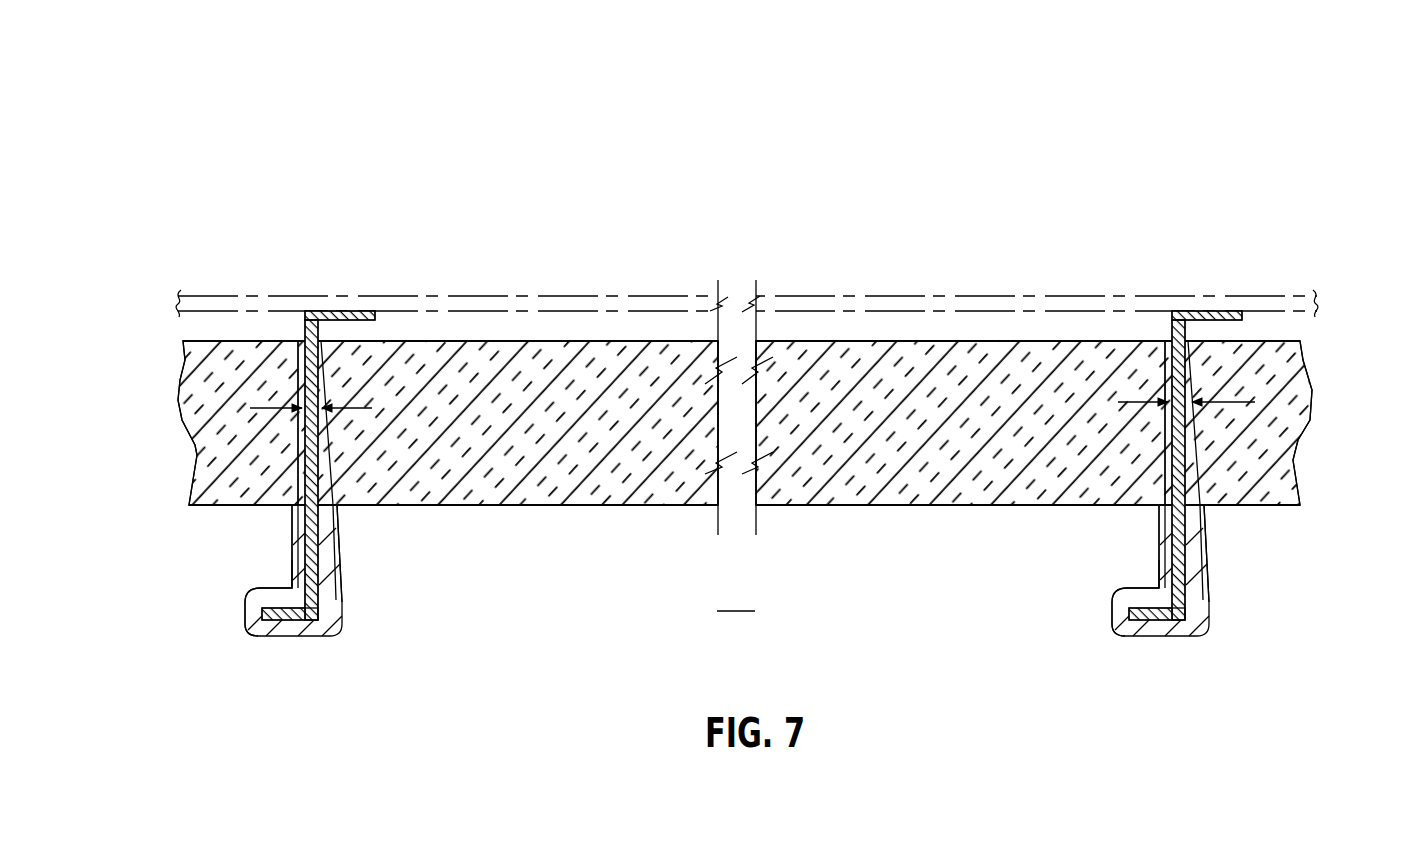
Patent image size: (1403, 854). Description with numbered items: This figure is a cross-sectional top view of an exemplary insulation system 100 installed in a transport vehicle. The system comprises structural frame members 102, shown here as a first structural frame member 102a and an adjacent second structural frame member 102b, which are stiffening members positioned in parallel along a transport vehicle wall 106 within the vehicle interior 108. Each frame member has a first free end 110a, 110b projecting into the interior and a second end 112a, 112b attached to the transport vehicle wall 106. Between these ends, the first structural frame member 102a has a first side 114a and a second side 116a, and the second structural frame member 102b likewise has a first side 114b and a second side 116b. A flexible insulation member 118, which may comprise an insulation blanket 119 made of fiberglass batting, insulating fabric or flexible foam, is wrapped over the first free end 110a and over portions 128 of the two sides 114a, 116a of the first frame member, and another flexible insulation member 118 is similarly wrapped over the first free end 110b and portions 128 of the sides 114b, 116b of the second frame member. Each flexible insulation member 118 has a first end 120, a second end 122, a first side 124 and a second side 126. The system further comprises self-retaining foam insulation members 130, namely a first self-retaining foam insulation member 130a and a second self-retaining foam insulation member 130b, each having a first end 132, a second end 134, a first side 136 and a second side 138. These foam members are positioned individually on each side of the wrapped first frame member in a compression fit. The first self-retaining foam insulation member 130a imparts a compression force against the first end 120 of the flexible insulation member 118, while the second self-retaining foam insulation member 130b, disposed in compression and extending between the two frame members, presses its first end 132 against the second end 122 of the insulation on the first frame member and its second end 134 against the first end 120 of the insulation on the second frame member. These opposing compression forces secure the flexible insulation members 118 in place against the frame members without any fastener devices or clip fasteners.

The insulation system 100 is at (1024, 165).
The structural frame member 102 is at (329, 290).
The first structural frame member 102a is at (1172, 317).
The second structural frame member 102b is at (304, 320).
The transport vehicle wall 106 is at (665, 295).
The vehicle interior 108 is at (738, 598).
The first free end 110a is at (1145, 635).
The first free end 110b is at (278, 635).
The second end 112a is at (1224, 311).
The second end 112b is at (360, 311).
The first side 114a is at (1199, 578).
The first side 114b is at (332, 578).
The second side 116a is at (1167, 537).
The second side 116b is at (300, 537).
The flexible insulation member 118 is at (333, 645).
The insulation blanket 119 is at (255, 605).
The first end 120 is at (368, 341).
The second end 122 is at (296, 346).
The first side 124 is at (322, 540).
The second side 126 is at (292, 568).
The portions 128 is at (298, 457).
The self-retaining foam insulation member 130 is at (190, 462).
The first self-retaining foam insulation member 130a is at (1282, 491).
The second self-retaining foam insulation member 130b is at (663, 505).
The first end 132 is at (300, 378).
The second end 134 is at (420, 358).
The first side 136 is at (855, 340).
The second side 138 is at (813, 507).